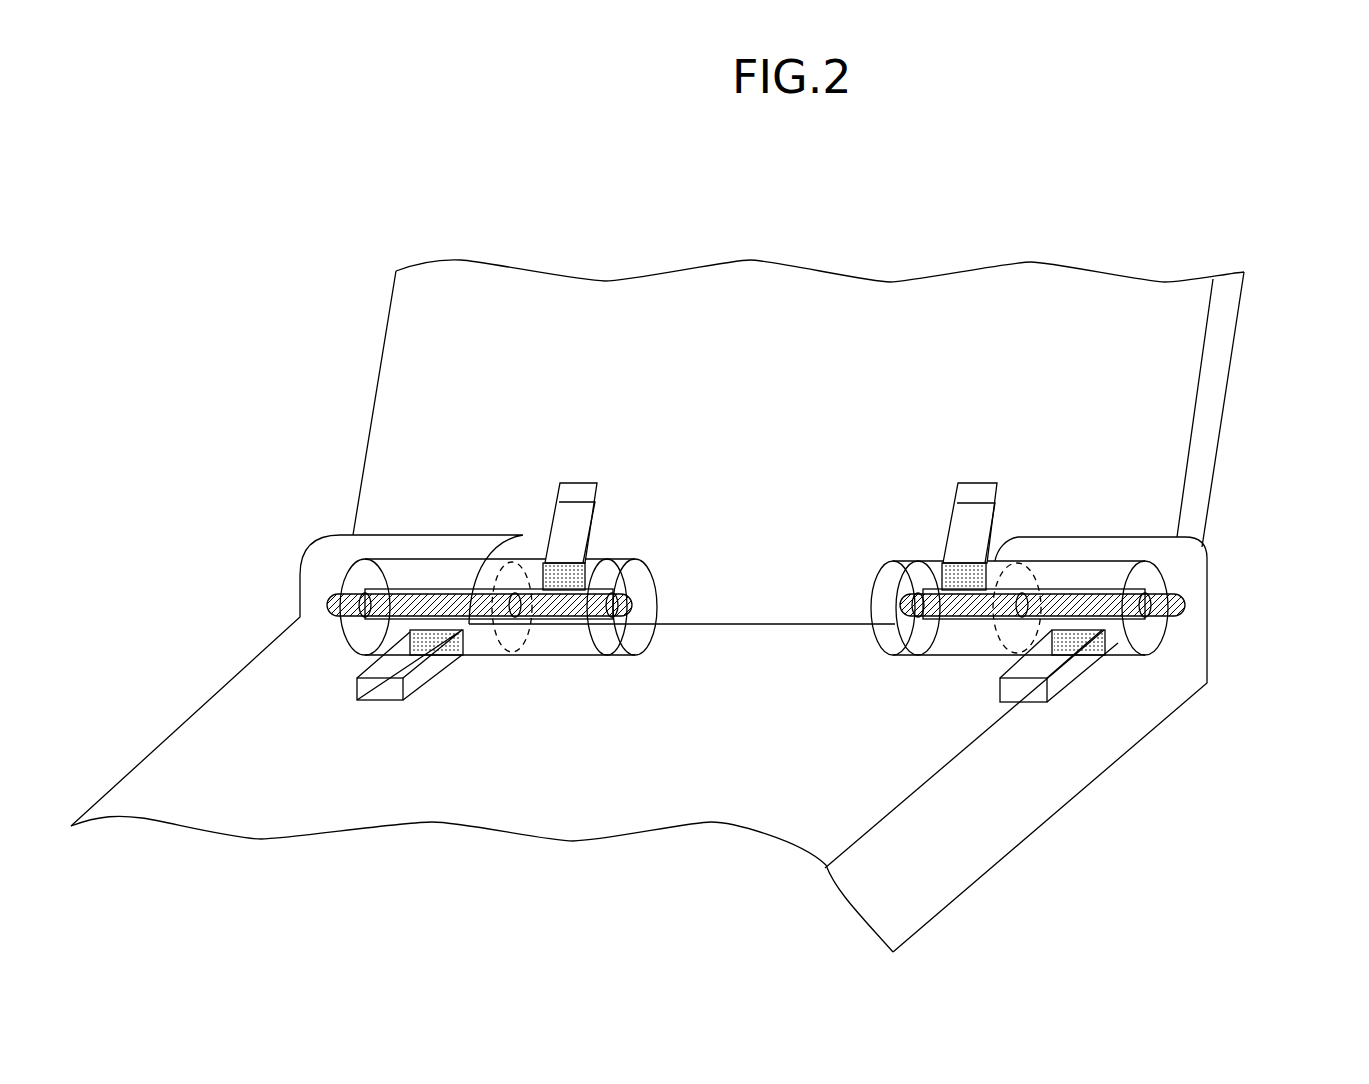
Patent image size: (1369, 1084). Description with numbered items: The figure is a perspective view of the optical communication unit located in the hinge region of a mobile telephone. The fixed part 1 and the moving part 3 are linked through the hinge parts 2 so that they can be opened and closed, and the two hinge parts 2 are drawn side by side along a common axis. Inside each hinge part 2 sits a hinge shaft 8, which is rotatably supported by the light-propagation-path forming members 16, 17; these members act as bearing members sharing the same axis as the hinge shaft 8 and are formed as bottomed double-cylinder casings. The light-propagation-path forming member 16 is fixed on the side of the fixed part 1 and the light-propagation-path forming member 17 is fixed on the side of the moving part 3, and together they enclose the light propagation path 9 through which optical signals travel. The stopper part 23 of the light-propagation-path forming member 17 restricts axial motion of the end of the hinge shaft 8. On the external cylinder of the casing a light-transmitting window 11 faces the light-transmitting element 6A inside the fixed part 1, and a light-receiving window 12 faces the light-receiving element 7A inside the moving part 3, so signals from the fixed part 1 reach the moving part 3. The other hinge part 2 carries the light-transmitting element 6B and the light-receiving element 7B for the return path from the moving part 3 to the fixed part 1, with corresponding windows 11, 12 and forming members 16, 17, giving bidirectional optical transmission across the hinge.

The fixed part 1 is at (990, 823).
The hinge part 2 is at (315, 535).
The moving part 3 is at (1167, 352).
The light-transmitting element 6A is at (387, 668).
The light-transmitting element 6B is at (973, 513).
The light-receiving element 7A is at (570, 522).
The light-receiving element 7B is at (1077, 672).
The hinge shaft 8 is at (1185, 601).
The light propagation path 9 is at (360, 577).
The light-transmitting window 11 is at (454, 659).
The light-receiving window 12 is at (572, 553).
The light-propagation-path forming member 16 is at (484, 646).
The light-propagation-path forming member 17 is at (562, 646).
The stopper part 23 is at (640, 577).